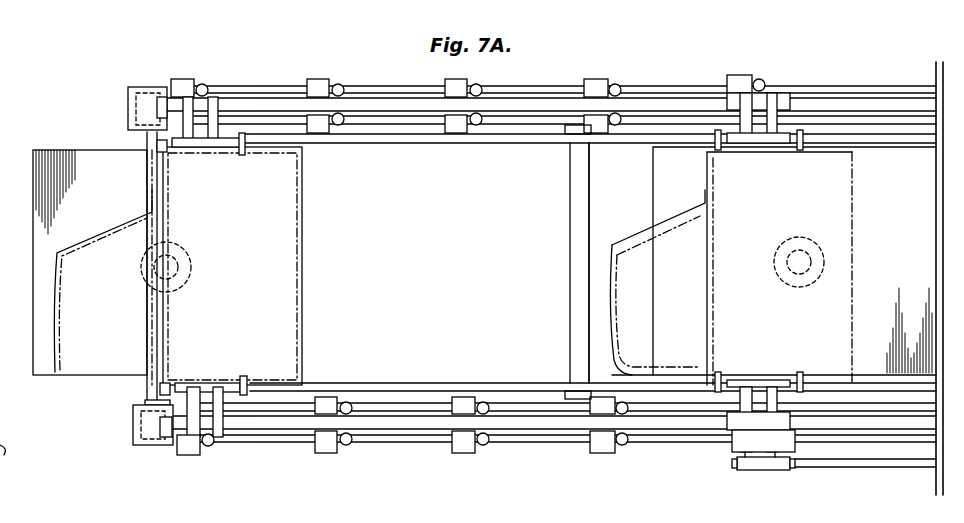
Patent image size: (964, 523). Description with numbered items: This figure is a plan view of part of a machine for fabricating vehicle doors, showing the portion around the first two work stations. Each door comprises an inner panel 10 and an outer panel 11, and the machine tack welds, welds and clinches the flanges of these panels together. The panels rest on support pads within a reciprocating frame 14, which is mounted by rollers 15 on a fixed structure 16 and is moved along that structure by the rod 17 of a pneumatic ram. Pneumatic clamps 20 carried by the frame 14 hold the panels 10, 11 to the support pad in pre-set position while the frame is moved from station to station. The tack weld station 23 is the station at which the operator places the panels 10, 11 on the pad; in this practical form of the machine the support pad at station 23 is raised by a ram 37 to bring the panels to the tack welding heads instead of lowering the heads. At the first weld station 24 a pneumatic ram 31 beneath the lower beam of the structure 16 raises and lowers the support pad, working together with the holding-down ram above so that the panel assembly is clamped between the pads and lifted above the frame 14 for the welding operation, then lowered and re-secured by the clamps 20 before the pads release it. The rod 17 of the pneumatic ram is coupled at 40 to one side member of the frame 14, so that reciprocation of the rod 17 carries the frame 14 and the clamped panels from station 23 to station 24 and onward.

The inner panel 10 is at (302, 219).
The outer panel 11 is at (707, 322).
The frame 14 is at (380, 100).
The rollers 15 is at (617, 84).
The structure 16 is at (572, 290).
The rod 17 is at (876, 463).
The pneumatic clamps 20 is at (230, 137).
The tack weld station 23 is at (132, 192).
The first weld station 24 is at (697, 189).
The pneumatic ram 31 is at (804, 240).
The ram 37 is at (186, 252).
The coupling point 40 is at (736, 460).